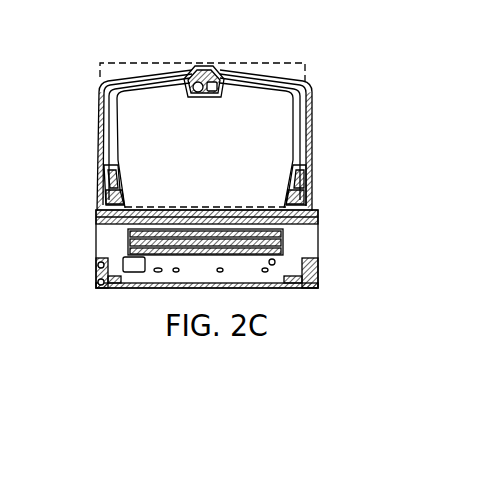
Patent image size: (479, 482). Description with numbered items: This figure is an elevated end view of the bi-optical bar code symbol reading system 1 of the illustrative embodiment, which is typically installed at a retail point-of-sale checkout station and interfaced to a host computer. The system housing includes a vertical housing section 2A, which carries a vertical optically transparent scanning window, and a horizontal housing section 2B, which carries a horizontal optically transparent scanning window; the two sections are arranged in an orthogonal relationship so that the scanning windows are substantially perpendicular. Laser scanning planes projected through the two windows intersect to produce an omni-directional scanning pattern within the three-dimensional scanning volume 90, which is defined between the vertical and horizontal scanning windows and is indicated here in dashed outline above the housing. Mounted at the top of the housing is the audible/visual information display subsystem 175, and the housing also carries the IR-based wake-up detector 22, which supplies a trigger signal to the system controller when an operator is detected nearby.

The bar code symbol reading system 1 is at (414, 79).
The vertical housing section 2A is at (128, 78).
The horizontal housing section 2B is at (312, 183).
The 3D scanning volume 90 is at (285, 63).
The audible/visual information display subsystem 175 is at (204, 64).
The IR-based wake-up detector 22 is at (102, 237).